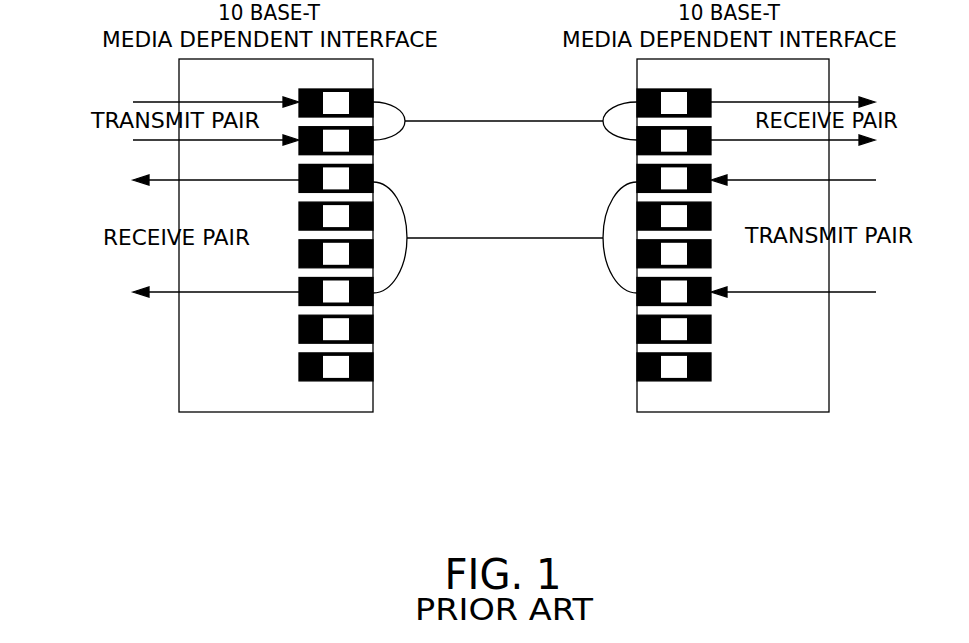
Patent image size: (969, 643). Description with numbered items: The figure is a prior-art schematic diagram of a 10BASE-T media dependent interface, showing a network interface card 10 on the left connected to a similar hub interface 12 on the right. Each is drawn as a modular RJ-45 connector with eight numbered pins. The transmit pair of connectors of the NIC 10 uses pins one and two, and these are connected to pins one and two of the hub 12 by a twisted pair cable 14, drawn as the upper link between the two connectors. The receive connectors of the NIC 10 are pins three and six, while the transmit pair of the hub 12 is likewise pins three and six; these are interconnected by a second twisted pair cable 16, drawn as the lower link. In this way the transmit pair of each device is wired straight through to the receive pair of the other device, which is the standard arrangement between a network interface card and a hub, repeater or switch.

The network interface card 10 is at (384, 476).
The hub interface 12 is at (571, 478).
The twisted pair cable 14 is at (504, 93).
The twisted pair cable 16 is at (507, 270).